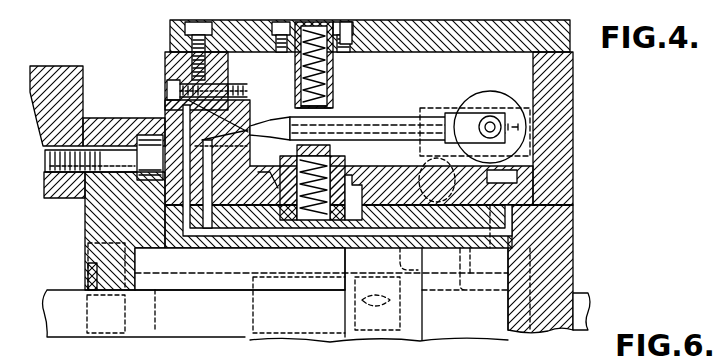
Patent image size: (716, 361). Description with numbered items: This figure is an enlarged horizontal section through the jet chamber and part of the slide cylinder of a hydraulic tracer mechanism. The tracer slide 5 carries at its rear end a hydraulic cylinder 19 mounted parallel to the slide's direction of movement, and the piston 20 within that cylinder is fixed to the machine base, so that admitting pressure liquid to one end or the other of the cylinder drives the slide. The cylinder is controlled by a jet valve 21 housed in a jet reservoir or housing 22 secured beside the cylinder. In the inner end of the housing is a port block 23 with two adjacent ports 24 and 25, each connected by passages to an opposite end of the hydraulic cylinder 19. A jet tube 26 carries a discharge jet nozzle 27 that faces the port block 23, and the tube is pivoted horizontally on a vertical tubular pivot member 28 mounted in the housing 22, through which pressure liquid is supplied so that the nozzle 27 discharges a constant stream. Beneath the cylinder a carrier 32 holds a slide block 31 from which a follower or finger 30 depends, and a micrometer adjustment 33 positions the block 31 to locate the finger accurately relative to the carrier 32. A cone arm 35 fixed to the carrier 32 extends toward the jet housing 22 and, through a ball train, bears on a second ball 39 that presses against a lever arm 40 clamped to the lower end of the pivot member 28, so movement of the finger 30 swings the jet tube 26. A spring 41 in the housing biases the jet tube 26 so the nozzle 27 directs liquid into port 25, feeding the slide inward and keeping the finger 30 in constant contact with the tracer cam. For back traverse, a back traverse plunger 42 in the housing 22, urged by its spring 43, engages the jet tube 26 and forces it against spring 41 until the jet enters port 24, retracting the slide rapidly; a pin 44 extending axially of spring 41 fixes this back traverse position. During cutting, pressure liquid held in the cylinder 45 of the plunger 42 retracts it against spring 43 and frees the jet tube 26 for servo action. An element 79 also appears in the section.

The tracer slide 5 is at (70, 66).
The hydraulic cylinder 19 is at (210, 254).
The piston 20 is at (353, 259).
The jet valve 21 is at (405, 99).
The jet reservoir or housing 22 is at (573, 115).
The port block 23 is at (228, 80).
The port 24 is at (243, 113).
The port 25 is at (245, 138).
The jet tube 26 is at (362, 117).
The discharge jet nozzle 27 is at (280, 118).
The vertical tubular pivot member 28 is at (490, 118).
The follower or finger 30 is at (420, 314).
The slide block 31 is at (240, 336).
The carrier 32 is at (481, 288).
The micrometer adjustment 33 is at (591, 302).
The cone arm 35 is at (400, 250).
The second ball 39 is at (422, 162).
The lever arm 40 is at (433, 108).
The spring 41 is at (327, 80).
The back traverse plunger 42 is at (330, 152).
The spring 43 is at (344, 166).
The pin 44 is at (322, 33).
The cylinder 45 is at (276, 178).
The element 79 is at (428, 346).